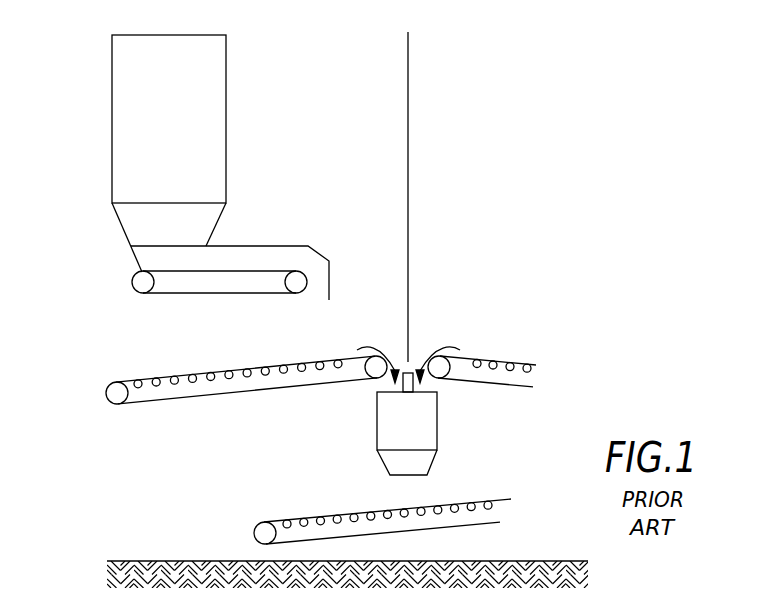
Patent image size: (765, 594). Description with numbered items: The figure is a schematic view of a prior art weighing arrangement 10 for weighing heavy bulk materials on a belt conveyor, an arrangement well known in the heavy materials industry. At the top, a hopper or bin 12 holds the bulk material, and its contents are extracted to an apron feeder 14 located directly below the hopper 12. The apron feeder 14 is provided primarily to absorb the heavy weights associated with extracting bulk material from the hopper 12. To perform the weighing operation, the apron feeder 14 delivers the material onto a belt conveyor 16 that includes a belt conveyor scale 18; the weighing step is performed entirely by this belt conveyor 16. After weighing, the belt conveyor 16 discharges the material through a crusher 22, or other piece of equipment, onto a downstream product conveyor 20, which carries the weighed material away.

The weighing arrangement 10 is at (84, 86).
The hopper 12 is at (226, 107).
The apron feeder 14 is at (187, 293).
The belt conveyor 16 is at (148, 378).
The belt conveyor scale 18 is at (303, 367).
The downstream product conveyor 20 is at (473, 500).
The crusher 22 is at (418, 418).